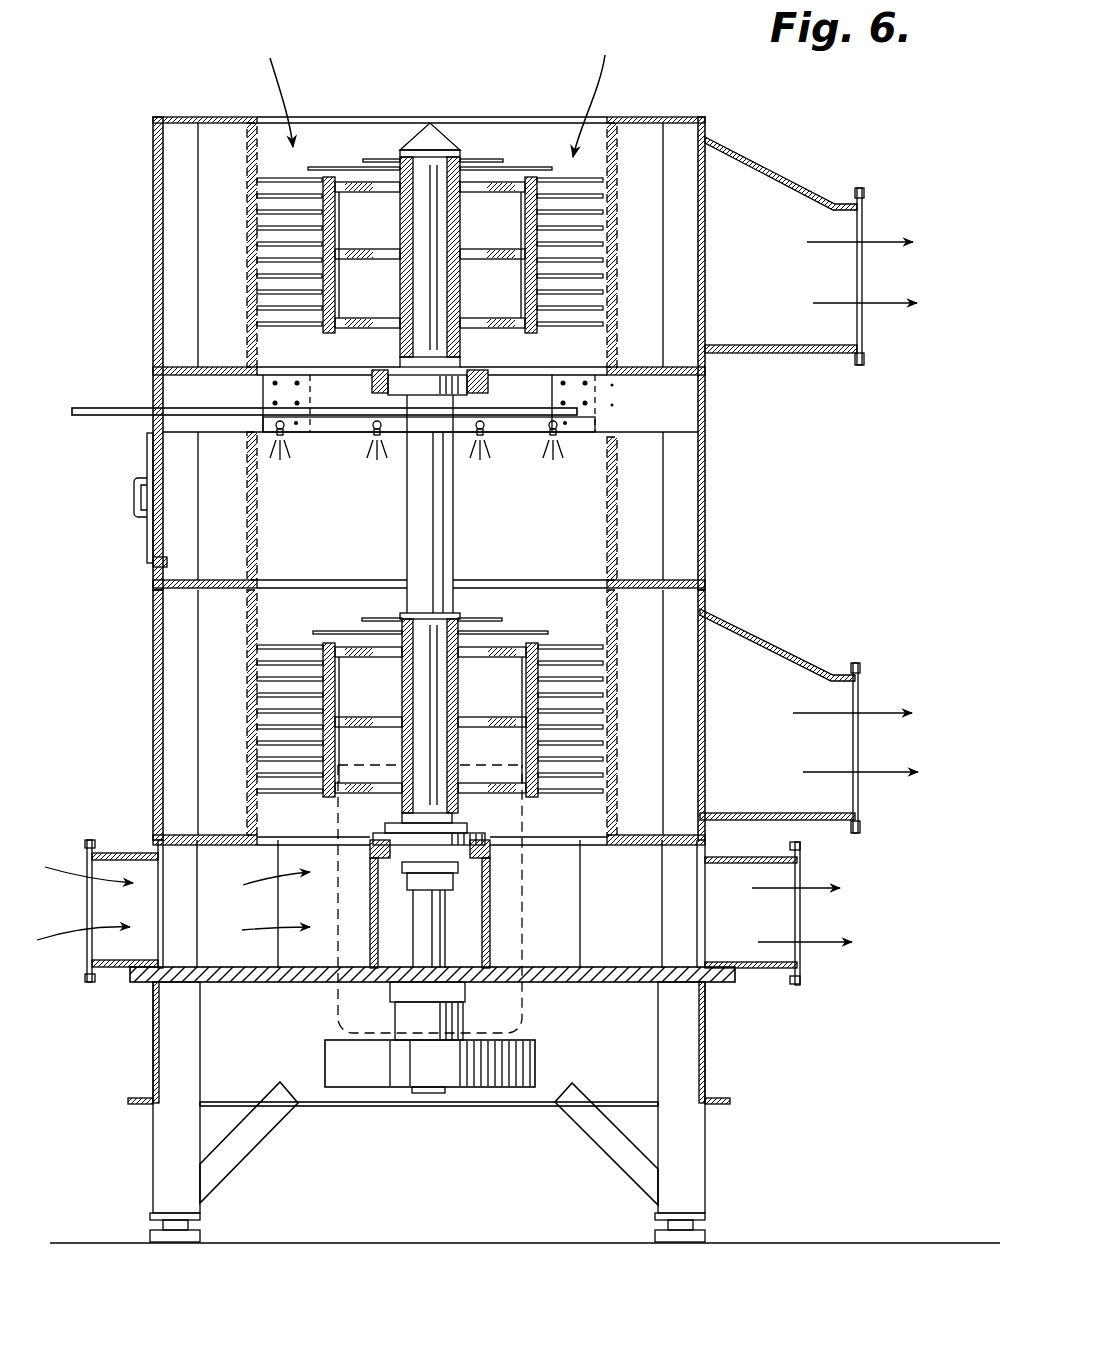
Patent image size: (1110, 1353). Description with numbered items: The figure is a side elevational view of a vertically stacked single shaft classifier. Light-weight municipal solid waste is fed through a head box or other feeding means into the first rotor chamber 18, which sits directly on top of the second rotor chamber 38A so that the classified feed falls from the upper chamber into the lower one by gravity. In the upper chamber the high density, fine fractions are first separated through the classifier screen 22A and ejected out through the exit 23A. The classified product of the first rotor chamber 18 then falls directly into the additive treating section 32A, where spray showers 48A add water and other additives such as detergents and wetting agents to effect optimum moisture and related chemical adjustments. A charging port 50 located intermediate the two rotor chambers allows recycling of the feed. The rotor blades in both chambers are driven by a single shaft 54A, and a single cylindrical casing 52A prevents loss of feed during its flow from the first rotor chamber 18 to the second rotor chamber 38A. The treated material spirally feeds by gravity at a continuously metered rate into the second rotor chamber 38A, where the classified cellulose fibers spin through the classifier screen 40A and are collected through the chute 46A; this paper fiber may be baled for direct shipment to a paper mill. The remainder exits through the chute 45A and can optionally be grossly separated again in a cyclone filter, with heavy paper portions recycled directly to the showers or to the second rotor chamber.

The first rotor chamber 18 is at (233, 164).
The classifier screen 22A is at (247, 243).
The exit 23A is at (862, 215).
The spray showers 48A is at (373, 434).
The additive treating section 32A is at (550, 465).
The rotor shaft 54A is at (455, 530).
The charging port 50 is at (143, 460).
The second rotor chamber 38A is at (238, 649).
The classifier screen 40A is at (243, 693).
The single cylindrical casing 52A is at (150, 727).
The chute 46A is at (858, 688).
The chute 45A is at (800, 952).